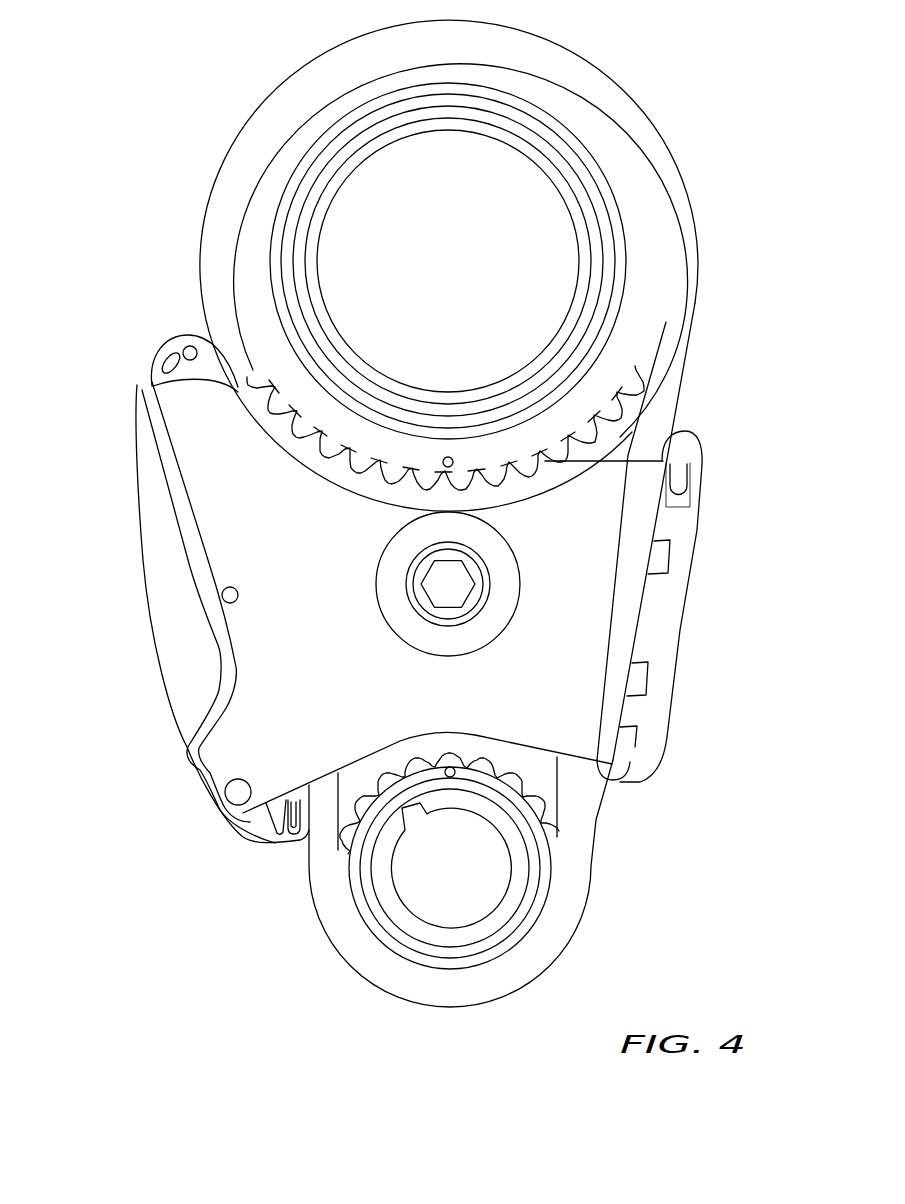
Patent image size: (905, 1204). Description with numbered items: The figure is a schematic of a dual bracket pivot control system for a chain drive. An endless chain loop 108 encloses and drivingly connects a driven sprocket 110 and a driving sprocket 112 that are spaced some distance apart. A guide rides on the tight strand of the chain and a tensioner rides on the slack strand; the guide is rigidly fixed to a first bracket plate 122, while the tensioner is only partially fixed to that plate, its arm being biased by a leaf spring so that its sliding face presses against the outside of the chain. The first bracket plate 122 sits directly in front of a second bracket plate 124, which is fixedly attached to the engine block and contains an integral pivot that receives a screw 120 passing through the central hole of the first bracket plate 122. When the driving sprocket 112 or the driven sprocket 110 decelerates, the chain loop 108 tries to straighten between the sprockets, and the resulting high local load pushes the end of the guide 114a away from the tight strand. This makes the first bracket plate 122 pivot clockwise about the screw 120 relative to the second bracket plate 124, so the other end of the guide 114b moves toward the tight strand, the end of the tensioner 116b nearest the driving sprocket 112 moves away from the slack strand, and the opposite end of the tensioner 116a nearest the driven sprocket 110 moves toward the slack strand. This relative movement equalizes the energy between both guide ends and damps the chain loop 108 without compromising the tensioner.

The endless chain loop 108 is at (603, 87).
The driven sprocket 110 is at (516, 237).
The driving sprocket 112 is at (473, 888).
The end of the guide 114a is at (673, 457).
The end of the guide 114b is at (627, 747).
The end of the tensioner 116a is at (178, 342).
The end of the tensioner 116b is at (280, 838).
The screw 120 is at (460, 577).
The first bracket plate 122 is at (304, 557).
The second bracket plate 124 is at (168, 615).